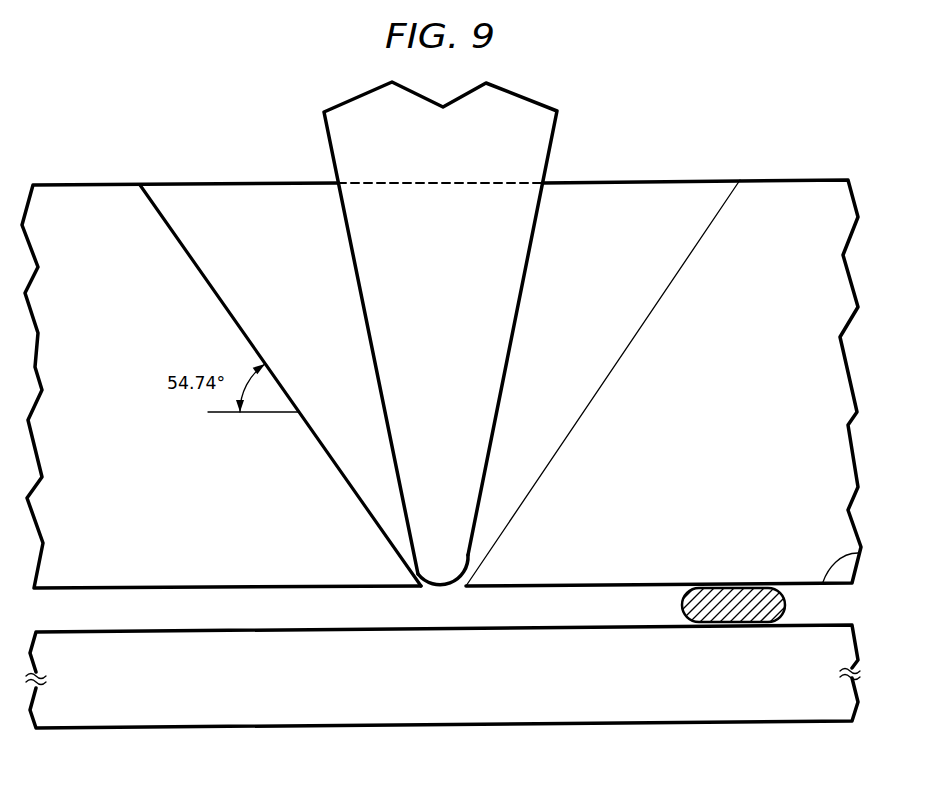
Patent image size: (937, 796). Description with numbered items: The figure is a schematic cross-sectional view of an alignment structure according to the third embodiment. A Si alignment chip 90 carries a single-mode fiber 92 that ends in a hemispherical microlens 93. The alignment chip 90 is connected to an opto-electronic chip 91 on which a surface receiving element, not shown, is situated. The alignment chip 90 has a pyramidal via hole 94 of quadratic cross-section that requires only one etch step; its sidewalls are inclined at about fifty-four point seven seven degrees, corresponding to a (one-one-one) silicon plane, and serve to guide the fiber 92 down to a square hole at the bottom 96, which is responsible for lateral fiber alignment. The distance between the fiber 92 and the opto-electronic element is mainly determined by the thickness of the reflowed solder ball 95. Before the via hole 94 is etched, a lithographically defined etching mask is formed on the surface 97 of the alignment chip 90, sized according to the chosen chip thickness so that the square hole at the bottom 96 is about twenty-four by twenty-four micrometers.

The Si alignment chip 90 is at (88, 573).
The opto-electronic chip 91 is at (86, 709).
The single-mode fiber 92 is at (528, 140).
The hemispherical microlens 93 is at (428, 552).
The pyramidal via hole 94 is at (237, 210).
The reflowed solder ball 95 is at (772, 607).
The bottom 96 is at (858, 553).
The surface 97 is at (785, 180).